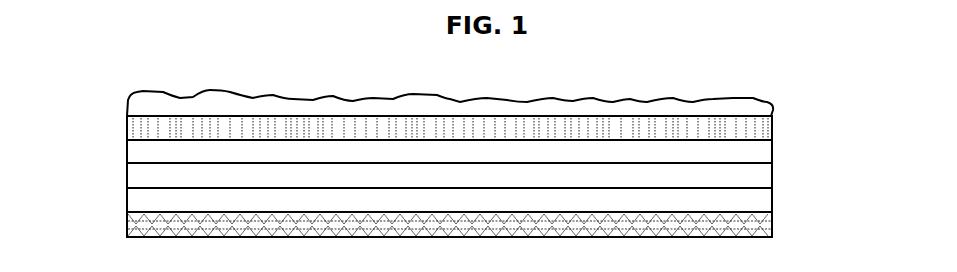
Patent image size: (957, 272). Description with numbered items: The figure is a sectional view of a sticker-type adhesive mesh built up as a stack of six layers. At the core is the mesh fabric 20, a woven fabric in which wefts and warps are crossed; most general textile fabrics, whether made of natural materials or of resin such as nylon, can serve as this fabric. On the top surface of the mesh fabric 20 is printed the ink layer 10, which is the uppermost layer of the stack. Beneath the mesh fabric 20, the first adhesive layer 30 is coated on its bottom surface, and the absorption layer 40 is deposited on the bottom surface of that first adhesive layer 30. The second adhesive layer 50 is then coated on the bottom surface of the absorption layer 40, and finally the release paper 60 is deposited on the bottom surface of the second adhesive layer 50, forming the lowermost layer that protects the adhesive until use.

The ink layer 10 is at (775, 105).
The mesh fabric 20 is at (127, 128).
The first adhesive layer 30 is at (775, 150).
The absorption layer 40 is at (127, 174).
The second adhesive layer 50 is at (775, 198).
The release paper 60 is at (127, 224).